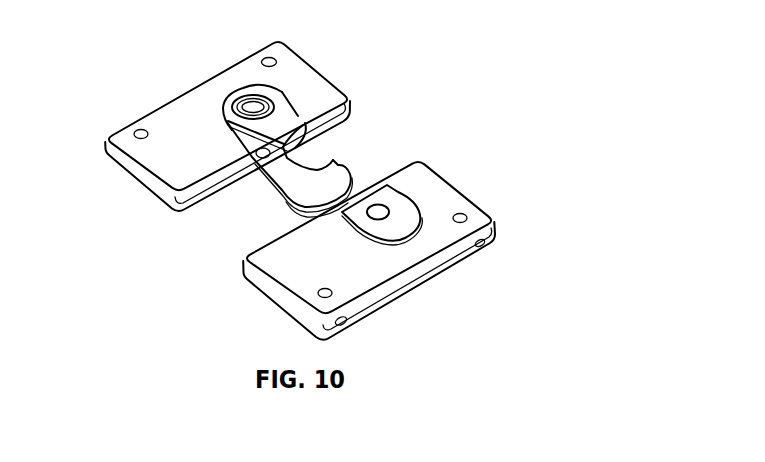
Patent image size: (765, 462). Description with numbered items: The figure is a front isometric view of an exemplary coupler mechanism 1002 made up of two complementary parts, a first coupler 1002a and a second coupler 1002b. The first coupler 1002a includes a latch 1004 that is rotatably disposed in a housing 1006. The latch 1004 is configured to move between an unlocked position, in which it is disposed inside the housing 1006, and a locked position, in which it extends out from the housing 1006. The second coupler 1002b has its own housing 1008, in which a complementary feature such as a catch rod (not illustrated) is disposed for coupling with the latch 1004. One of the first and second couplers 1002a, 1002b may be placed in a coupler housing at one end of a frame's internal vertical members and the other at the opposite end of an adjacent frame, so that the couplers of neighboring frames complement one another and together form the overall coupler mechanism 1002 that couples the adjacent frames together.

The coupler mechanism 1002 is at (462, 35).
The first coupler 1002a is at (315, 70).
The second coupler 1002b is at (462, 190).
The latch 1004 is at (285, 202).
The housing 1006 is at (190, 86).
The housing 1008 is at (407, 283).